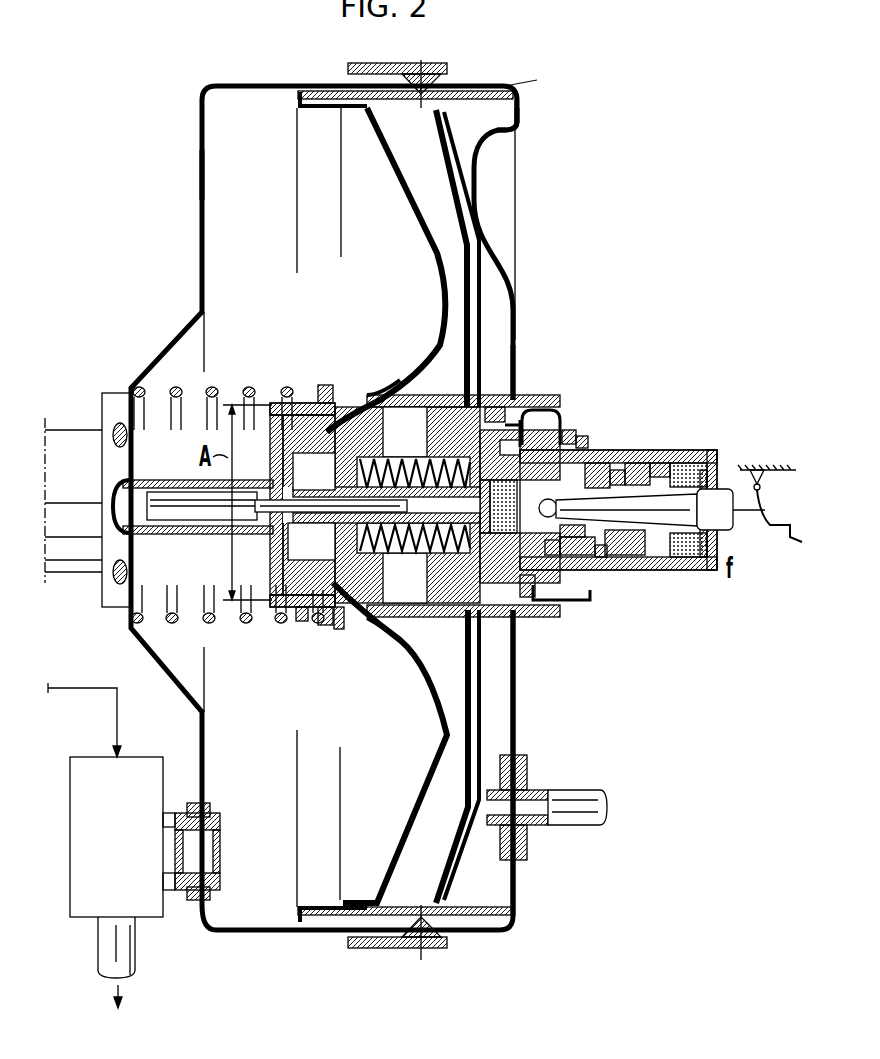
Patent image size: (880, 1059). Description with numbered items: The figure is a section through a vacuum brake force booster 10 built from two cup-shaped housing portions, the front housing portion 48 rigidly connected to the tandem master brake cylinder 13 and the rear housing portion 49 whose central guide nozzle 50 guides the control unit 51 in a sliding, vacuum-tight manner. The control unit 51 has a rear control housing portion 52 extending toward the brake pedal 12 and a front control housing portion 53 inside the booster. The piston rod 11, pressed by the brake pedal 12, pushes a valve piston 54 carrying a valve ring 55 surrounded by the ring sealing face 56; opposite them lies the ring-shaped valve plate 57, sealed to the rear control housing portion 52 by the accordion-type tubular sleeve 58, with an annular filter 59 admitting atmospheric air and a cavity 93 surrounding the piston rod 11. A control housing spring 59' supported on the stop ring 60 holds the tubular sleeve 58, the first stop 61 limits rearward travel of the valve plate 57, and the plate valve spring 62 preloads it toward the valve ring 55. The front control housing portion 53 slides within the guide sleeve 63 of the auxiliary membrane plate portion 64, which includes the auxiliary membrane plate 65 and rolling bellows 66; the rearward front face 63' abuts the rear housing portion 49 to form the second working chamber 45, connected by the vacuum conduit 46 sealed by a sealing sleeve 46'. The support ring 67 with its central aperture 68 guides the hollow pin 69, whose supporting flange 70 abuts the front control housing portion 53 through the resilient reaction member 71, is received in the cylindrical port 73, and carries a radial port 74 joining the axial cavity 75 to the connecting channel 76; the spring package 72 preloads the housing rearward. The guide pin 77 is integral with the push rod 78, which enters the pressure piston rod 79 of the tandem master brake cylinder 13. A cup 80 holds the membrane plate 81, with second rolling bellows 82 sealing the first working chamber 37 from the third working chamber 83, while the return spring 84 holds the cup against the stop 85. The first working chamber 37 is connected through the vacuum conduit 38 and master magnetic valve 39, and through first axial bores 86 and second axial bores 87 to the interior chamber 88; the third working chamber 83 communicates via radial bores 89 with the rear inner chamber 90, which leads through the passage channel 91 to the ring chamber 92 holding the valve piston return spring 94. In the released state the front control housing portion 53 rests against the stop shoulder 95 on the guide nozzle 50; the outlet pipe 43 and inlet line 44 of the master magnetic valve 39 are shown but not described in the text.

The vacuum brake force booster 10 is at (537, 81).
The piston rod 11 is at (715, 496).
The brake pedal 12 is at (775, 530).
The tandem master brake cylinder 13 is at (90, 445).
The first working chamber 37 is at (212, 222).
The vacuum conduit 38 is at (218, 849).
The master magnetic valve 39 is at (76, 822).
The outlet pipe 43 is at (136, 946).
The inlet line 44 is at (86, 688).
The second working chamber 45 is at (516, 885).
The vacuum conduit 46 is at (547, 788).
The sealing sleeve 46' is at (533, 792).
The front housing portion 48 is at (200, 170).
The rear housing portion 49 is at (493, 200).
The guide nozzle 50 is at (528, 418).
The control unit 51 is at (659, 393).
The rear control housing portion 52 is at (680, 570).
The front control housing portion 53 is at (520, 440).
The valve piston 54 is at (560, 598).
The valve ring 55 is at (580, 586).
The ring sealing face 56 is at (592, 460).
The valve plate 57 is at (590, 568).
The tubular sleeve 58 is at (620, 458).
The annular filter 59 is at (719, 538).
The control housing spring 59' is at (670, 435).
The stop ring 60 is at (652, 580).
The first stop 61 is at (610, 572).
The plate valve spring 62 is at (655, 466).
The guide sleeve 63 is at (463, 352).
The rearward front face 63' is at (531, 361).
The auxiliary membrane plate portion 64 is at (516, 670).
The auxiliary membrane plate 65 is at (477, 243).
The rolling bellows 66 is at (518, 125).
The support ring 67 is at (368, 407).
The central aperture 68 is at (336, 479).
The hollow pin 69 is at (305, 622).
The supporting flange 70 is at (527, 628).
The resilient reaction member 71 is at (521, 415).
The spring package 72 is at (396, 546).
The cylindrical port 73 is at (438, 690).
The radial port 74 is at (441, 470).
The axial cavity 75 is at (337, 630).
The connecting channel 76 is at (555, 416).
The guide pin 77 is at (318, 521).
The push rod 78 is at (185, 514).
The pressure piston rod 79 is at (112, 491).
The cup 80 is at (272, 403).
The membrane plate 81 is at (423, 237).
The second rolling bellows 82 is at (300, 105).
The third working chamber 83 is at (463, 288).
The return spring 84 is at (172, 623).
The stop 85 is at (272, 610).
The first axial bores 86 is at (276, 462).
The second axial bores 87 is at (322, 396).
The interior chamber 88 is at (399, 366).
The radial bores 89 is at (453, 397).
The rear inner chamber 90 is at (490, 420).
The passage channel 91 is at (528, 600).
The ring chamber 92 is at (630, 560).
The cavity 93 is at (690, 462).
The valve piston return spring 94 is at (582, 438).
The stop shoulder 95 is at (568, 430).